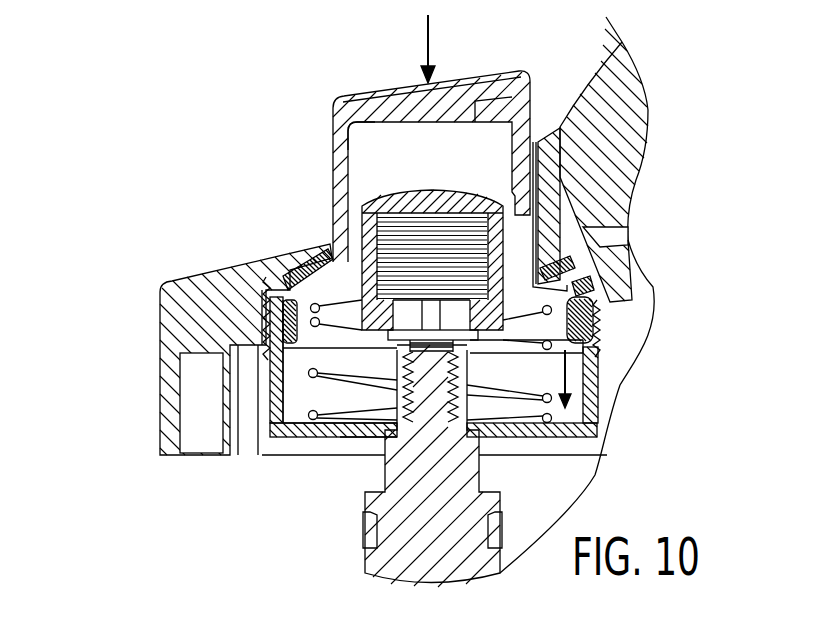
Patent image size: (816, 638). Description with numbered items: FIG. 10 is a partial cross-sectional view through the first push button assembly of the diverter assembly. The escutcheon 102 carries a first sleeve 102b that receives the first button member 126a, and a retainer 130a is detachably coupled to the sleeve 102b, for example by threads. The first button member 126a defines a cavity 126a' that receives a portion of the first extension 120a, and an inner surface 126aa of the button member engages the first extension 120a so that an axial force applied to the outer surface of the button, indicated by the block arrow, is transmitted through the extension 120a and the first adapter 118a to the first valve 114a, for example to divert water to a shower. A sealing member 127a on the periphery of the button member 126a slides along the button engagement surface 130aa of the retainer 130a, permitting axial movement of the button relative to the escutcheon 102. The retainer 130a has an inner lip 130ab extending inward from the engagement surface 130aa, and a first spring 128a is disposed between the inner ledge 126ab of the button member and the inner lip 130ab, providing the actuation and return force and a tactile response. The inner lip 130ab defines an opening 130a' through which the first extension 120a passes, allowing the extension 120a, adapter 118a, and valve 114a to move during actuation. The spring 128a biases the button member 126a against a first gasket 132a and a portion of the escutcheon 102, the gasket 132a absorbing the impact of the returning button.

The escutcheon 102 is at (185, 318).
The first sleeve 102b is at (260, 323).
The first valve 114a is at (448, 560).
The first adapter 118a is at (408, 317).
The first extension 120a is at (499, 219).
The first button member 126a is at (450, 142).
The inner surface 126aa is at (367, 125).
The cavity 126a' is at (622, 209).
The inner ledge 126ab is at (535, 300).
The sealing member 127a is at (577, 320).
The first spring 128a is at (513, 400).
The retainer 130a is at (332, 367).
The button engagement surface 130aa is at (297, 390).
The inner lip 130ab is at (313, 433).
The opening 130a' is at (343, 505).
The first gasket 132a is at (313, 278).